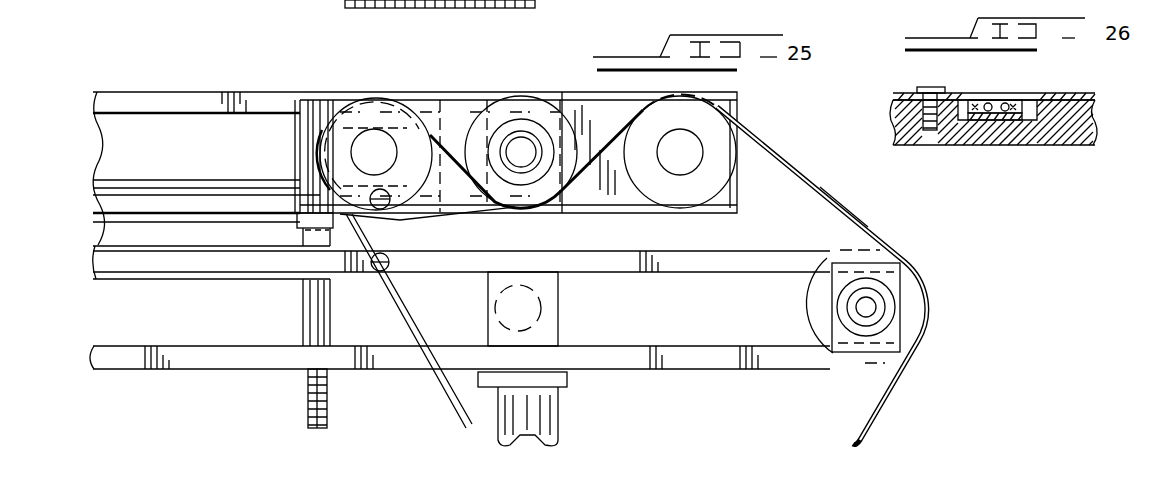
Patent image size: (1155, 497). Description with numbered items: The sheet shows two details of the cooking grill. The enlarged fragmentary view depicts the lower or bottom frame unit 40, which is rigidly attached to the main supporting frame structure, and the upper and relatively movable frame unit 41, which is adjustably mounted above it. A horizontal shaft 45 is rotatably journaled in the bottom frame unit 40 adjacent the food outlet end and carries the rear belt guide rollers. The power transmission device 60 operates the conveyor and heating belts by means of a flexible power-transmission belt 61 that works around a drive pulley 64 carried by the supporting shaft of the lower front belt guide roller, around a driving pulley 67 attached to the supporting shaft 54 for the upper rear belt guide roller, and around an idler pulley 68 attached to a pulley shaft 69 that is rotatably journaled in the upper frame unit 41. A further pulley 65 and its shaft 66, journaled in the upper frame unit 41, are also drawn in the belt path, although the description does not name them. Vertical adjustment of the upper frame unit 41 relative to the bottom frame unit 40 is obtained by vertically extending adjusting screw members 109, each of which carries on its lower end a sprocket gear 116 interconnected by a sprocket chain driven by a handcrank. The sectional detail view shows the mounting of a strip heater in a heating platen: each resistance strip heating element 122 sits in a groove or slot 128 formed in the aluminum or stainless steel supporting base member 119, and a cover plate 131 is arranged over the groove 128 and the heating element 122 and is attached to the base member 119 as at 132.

In FIG. 25, the upper and relatively movable frame unit 41 is at (208, 97).
In FIG. 25, the idler pulley 68 is at (353, 118).
In FIG. 25, the pulley shaft 69 is at (377, 150).
In FIG. 25, the driving pulley 67 is at (504, 106).
In FIG. 25, the supporting shaft 54 is at (523, 150).
In FIG. 25, the pulley 65 is at (704, 128).
In FIG. 25, the pulley shaft 66 is at (689, 152).
In FIG. 25, the power transmission device 60 is at (792, 160).
In FIG. 25, the flexible power-transmission belt 61 is at (833, 203).
In FIG. 25, the horizontal shaft 45 is at (868, 305).
In FIG. 25, the drive pulley 64 is at (921, 310).
In FIG. 25, the lower or bottom frame unit 40 is at (218, 372).
In FIG. 25, the adjusting screw member 109 is at (328, 398).
In FIG. 25, the sprocket gear 116 is at (481, 8).
In FIG. 26, the attachment of cover plate 132 is at (940, 88).
In FIG. 26, the cover plate 131 is at (1060, 95).
In FIG. 26, the groove or slot 128 is at (962, 120).
In FIG. 26, the middle pair of resistance strip heating elements 122 is at (1005, 122).
In FIG. 26, the supporting base member 119 is at (1085, 147).